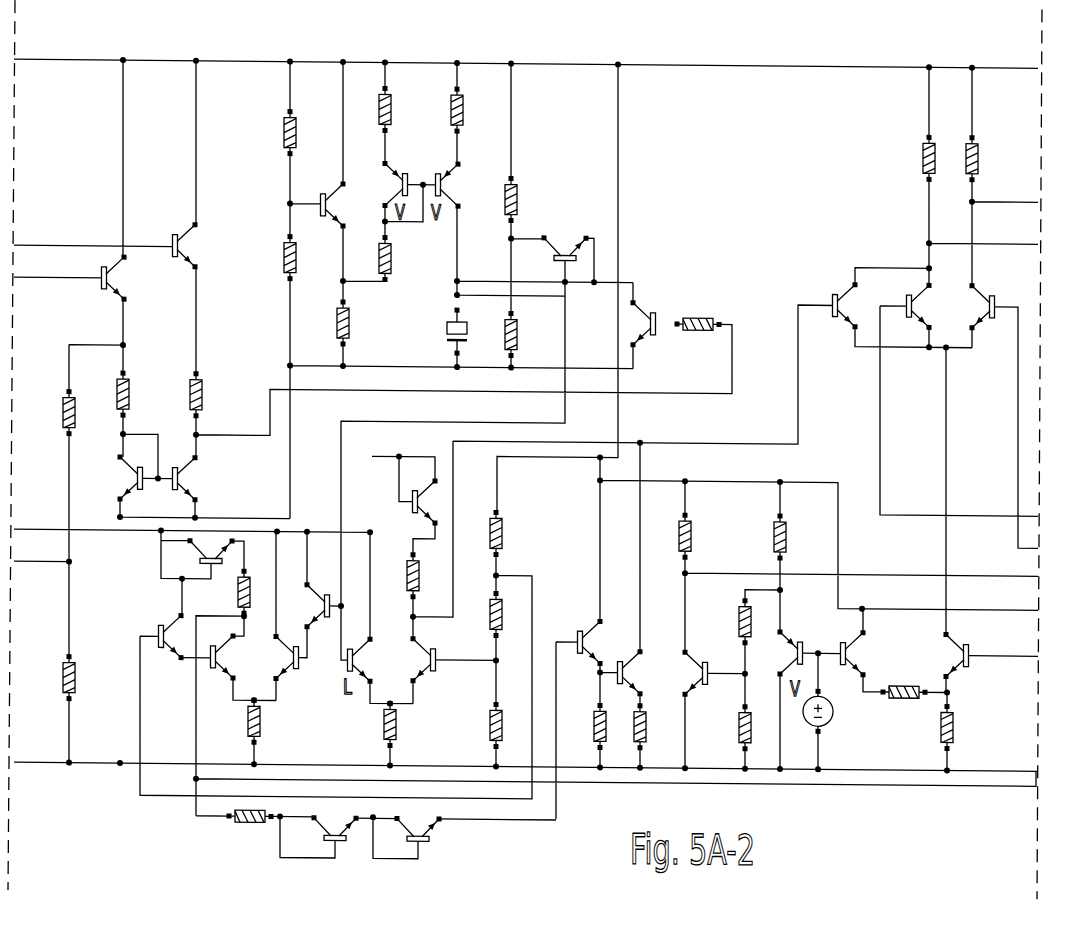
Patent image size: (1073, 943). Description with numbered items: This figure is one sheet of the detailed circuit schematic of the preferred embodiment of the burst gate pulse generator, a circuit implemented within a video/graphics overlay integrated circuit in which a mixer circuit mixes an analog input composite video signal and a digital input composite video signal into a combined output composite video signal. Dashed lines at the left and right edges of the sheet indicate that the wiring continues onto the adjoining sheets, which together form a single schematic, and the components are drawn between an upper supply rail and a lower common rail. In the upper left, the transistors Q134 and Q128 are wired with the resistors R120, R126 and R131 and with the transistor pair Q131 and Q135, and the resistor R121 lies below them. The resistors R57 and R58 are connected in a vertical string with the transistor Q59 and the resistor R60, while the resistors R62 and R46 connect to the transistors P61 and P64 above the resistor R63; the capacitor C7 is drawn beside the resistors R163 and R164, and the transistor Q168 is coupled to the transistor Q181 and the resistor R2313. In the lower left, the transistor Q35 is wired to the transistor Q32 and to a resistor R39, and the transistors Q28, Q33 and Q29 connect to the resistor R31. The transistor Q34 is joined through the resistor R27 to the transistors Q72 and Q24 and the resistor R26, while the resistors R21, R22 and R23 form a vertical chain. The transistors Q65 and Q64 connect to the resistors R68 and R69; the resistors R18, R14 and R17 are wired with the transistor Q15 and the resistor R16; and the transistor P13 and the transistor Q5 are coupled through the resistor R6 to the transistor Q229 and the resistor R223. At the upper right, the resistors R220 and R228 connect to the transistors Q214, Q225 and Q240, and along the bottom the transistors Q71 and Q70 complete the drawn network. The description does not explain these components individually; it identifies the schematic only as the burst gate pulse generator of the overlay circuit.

The resistor R57 is at (273, 132).
The resistor R58 is at (273, 257).
The transistor Q134 is at (172, 241).
The transistor Q128 is at (98, 284).
The resistor R120 is at (48, 412).
The resistor R126 is at (143, 394).
The resistor R131 is at (216, 394).
The transistor Q131 is at (113, 478).
The transistor Q135 is at (206, 479).
The resistor R121 is at (46, 678).
The transistor Q35 is at (200, 555).
The transistor Q32 is at (163, 632).
The resistor R39 is at (239, 708).
The transistor Q28 is at (236, 656).
The transistor Q33 is at (303, 605).
The transistor Q29 is at (291, 666).
The resistor R31 is at (237, 720).
The transistor Q59 is at (323, 203).
The resistor R60 is at (325, 322).
The resistor R62 is at (400, 109).
The resistor R46 is at (473, 110).
The PNP transistor P61 is at (382, 184).
The PNP transistor P64 is at (460, 184).
The resistor R63 is at (400, 258).
The capacitor C7 is at (445, 331).
The resistor R163 is at (531, 199).
The resistor R164 is at (531, 334).
The transistor Q168 is at (565, 239).
The transistor Q181 is at (657, 322).
The resistor R2313 is at (697, 339).
The transistor Q34 is at (415, 507).
The resistor R27 is at (397, 575).
The transistor Q72 is at (372, 660).
The transistor Q24 is at (430, 655).
The resistor R26 is at (374, 724).
The resistor R21 is at (511, 533).
The resistor R22 is at (479, 614).
The resistor R23 is at (478, 725).
The transistor Q65 is at (581, 640).
The transistor Q64 is at (623, 669).
The resistor R68 is at (584, 726).
The resistor R69 is at (654, 726).
The resistor R18 is at (700, 536).
The resistor R14 is at (795, 536).
The resistor R17 is at (729, 621).
The transistor Q15 is at (701, 670).
The resistor R16 is at (728, 727).
The PNP transistor P13 is at (797, 649).
The transistor Q5 is at (860, 653).
The resistor R6 is at (904, 681).
The resistor R223 is at (925, 728).
The transistor Q229 is at (969, 653).
The resistor R220 is at (907, 157).
The resistor R228 is at (992, 158).
The transistor Q214 is at (832, 304).
The transistor Q225 is at (906, 305).
The transistor Q240 is at (993, 306).
The transistor Q71 is at (322, 832).
The transistor Q70 is at (429, 833).